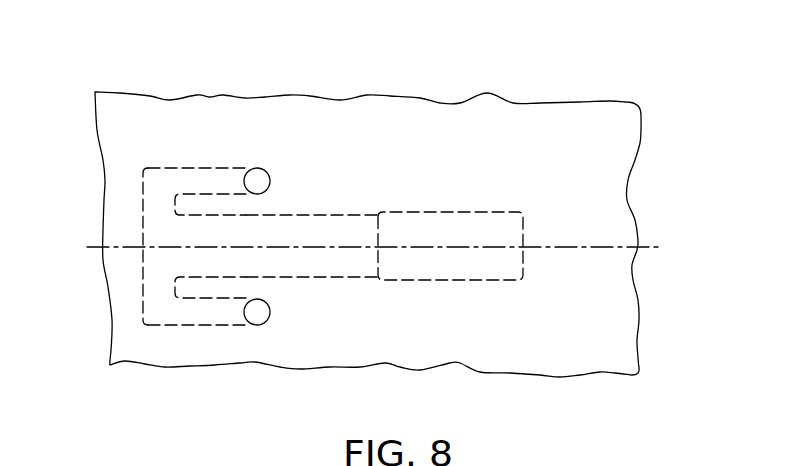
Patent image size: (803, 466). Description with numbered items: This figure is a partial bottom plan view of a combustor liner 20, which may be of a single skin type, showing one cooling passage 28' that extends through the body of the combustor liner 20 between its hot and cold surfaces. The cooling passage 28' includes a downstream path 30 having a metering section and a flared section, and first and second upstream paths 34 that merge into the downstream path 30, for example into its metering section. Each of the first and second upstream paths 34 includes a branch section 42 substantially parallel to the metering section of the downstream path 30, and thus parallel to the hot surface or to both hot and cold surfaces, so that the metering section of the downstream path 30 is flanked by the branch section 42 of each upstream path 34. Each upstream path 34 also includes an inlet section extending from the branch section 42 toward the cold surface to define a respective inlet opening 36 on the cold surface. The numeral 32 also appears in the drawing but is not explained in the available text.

The combustor liner 20 is at (627, 141).
The cooling passage 28' is at (284, 161).
The downstream path 30 is at (357, 268).
The enlarged portion 32 is at (507, 280).
The upstream path 34 is at (152, 201).
The inlet opening 36 is at (258, 178).
The branch section 42 is at (192, 168).